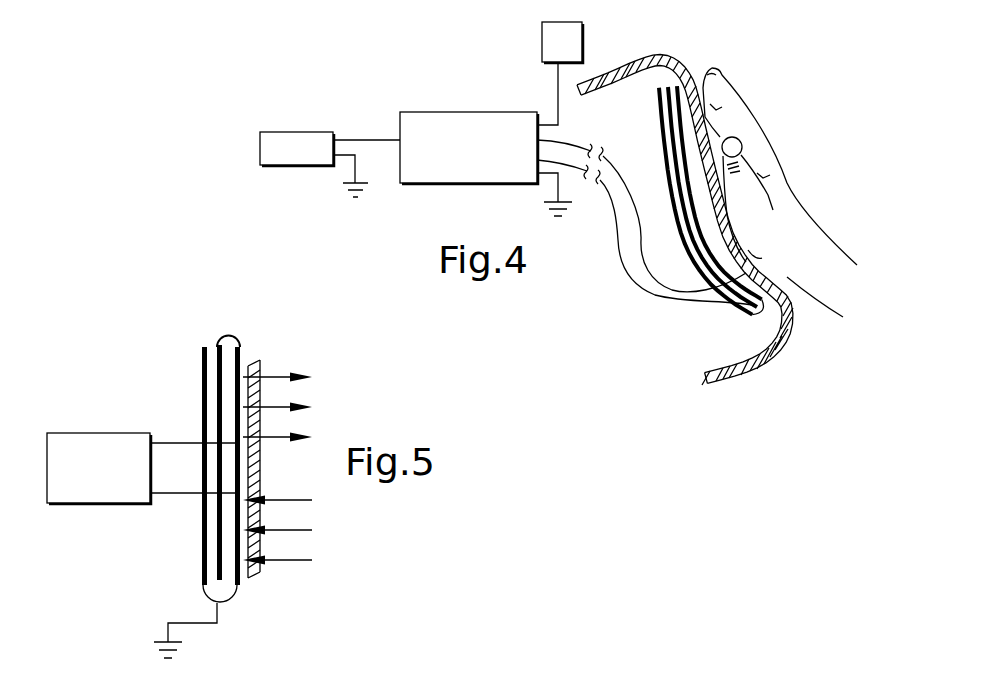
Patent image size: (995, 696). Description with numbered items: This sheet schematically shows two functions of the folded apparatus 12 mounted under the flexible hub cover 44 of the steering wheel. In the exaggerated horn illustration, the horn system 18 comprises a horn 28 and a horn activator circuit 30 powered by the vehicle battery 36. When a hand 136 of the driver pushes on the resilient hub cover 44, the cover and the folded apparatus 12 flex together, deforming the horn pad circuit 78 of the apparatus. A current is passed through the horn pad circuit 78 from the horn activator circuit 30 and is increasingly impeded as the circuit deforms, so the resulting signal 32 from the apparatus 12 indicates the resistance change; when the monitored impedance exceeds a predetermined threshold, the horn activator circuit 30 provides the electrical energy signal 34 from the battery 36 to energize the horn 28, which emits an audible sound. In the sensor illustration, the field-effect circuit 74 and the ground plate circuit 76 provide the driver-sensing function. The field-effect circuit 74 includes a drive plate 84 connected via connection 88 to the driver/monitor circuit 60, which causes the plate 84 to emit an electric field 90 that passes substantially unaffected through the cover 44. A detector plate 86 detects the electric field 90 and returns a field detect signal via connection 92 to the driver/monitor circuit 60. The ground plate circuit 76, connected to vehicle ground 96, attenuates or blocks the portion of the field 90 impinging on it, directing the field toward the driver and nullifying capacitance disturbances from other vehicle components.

In FIG. 4, the folded apparatus 12 is at (638, 118).
In FIG. 5, the folded apparatus 12 is at (174, 328).
In FIG. 4, the horn system 18 is at (328, 82).
In FIG. 4, the horn 28 is at (272, 132).
In FIG. 4, the horn activator circuit 30 is at (413, 117).
In FIG. 4, the signal 32 is at (661, 293).
In FIG. 4, the electrical energy signal 34 is at (375, 139).
In FIG. 4, the vehicle battery 36 is at (542, 49).
In FIG. 4, the hub cover 44 is at (648, 57).
In FIG. 5, the hub cover 44 is at (257, 450).
In FIG. 5, the driver/monitor circuit 60 is at (132, 433).
In FIG. 5, the field-effect circuit 74 is at (251, 328).
In FIG. 5, the ground plate circuit 76 is at (212, 332).
In FIG. 4, the horn pad circuit 78 is at (666, 163).
In FIG. 5, the drive plate 84 is at (243, 352).
In FIG. 5, the detector plate 86 is at (240, 586).
In FIG. 5, the connection 88 is at (190, 443).
In FIG. 5, the electric field 90 is at (276, 376).
In FIG. 5, the connection 92 is at (190, 495).
In FIG. 5, the vehicle ground 96 is at (200, 622).
In FIG. 4, the hand 136 is at (801, 207).